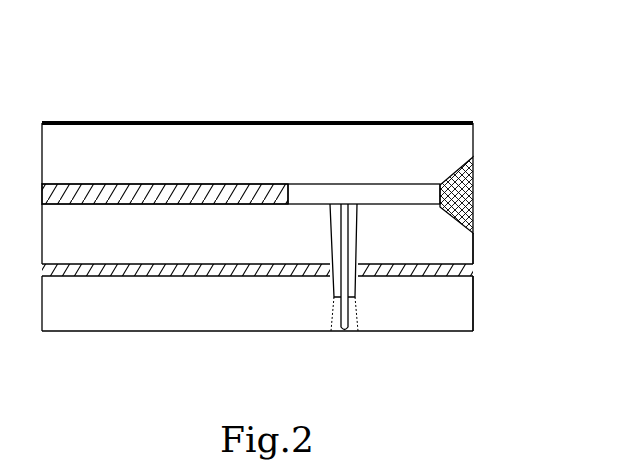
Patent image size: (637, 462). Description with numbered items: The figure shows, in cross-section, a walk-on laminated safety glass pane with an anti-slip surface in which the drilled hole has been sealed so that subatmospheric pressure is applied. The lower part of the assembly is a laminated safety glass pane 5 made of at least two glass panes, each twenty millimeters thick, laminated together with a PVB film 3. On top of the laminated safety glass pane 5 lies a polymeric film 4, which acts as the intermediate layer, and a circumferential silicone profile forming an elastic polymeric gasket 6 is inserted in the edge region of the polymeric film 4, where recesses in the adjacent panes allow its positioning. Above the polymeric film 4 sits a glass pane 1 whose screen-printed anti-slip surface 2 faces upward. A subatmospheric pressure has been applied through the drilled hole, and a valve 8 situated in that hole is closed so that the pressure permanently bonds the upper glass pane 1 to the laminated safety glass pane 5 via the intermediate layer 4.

The glass pane 1 is at (486, 151).
The anti-slip surface 2 is at (325, 122).
The PVB film 3 is at (480, 270).
The polymeric film 4 is at (172, 183).
The laminated safety glass pane 5 is at (479, 249).
The elastic polymeric gasket 6 is at (479, 193).
The valve 8 is at (360, 335).